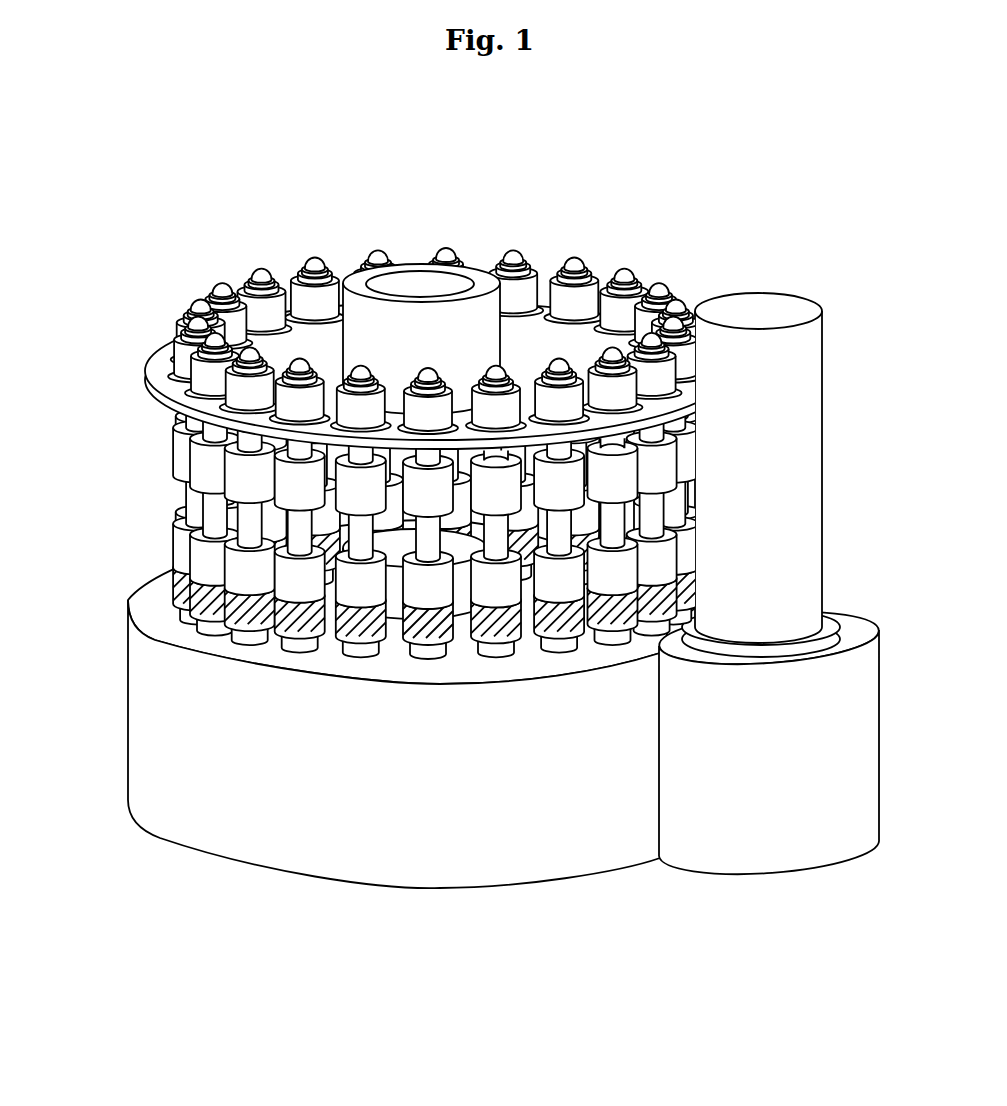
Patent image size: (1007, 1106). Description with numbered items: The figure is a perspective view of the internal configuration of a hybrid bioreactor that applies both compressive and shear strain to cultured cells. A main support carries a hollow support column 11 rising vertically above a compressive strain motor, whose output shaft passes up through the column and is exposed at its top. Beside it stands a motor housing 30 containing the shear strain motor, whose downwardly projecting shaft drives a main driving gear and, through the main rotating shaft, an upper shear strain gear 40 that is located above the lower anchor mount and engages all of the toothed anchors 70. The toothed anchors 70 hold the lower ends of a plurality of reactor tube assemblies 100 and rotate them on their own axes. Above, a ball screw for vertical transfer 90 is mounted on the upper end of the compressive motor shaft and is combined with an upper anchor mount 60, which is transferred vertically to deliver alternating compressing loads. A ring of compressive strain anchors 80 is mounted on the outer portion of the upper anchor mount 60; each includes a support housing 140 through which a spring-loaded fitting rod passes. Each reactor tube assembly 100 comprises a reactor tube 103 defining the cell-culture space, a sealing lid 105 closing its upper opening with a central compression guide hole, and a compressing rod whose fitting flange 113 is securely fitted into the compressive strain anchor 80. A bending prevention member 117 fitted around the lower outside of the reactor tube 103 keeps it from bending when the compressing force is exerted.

The support column 11 is at (463, 507).
The motor housing 30 is at (800, 407).
The upper shear strain gear 40 is at (160, 612).
The upper anchor mount 60 is at (276, 343).
The toothed anchors 70 is at (178, 592).
The compressive strain anchors 80 is at (386, 243).
The ball screw for vertical transfer 90 is at (424, 258).
The reactor tube assemblies 100 is at (192, 510).
The reactor tube 103 is at (617, 532).
The sealing lid 105 is at (172, 454).
The fitting flange 113 is at (185, 420).
The bending prevention member 117 is at (613, 557).
The support housing 140 is at (592, 292).